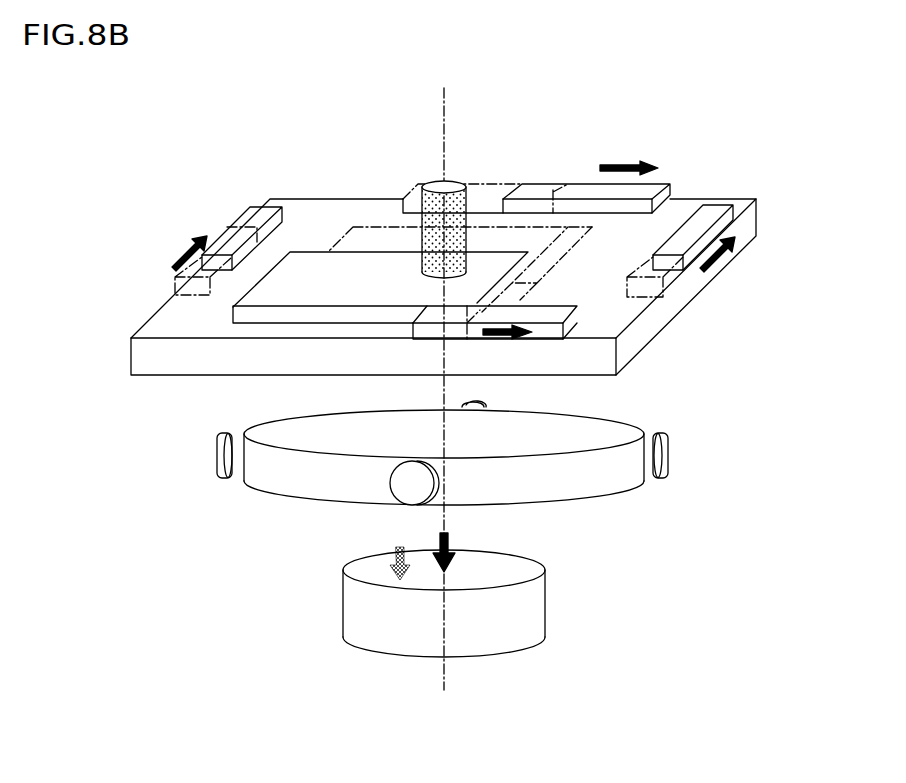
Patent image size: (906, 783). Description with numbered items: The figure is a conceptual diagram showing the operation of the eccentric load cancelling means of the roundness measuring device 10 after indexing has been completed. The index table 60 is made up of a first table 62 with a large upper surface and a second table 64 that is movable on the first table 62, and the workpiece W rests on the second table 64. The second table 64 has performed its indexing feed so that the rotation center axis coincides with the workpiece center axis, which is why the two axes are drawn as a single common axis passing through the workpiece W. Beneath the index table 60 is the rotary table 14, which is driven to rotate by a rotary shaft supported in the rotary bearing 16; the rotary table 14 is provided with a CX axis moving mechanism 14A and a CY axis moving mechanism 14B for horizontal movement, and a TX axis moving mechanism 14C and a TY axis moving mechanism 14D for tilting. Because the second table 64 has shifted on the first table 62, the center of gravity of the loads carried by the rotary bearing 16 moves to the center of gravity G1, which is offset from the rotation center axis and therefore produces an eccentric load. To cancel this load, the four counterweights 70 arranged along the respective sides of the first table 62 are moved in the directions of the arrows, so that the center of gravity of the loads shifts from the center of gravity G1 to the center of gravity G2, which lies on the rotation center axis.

The roundness measuring device 10 is at (556, 99).
The rotary table 14 is at (624, 413).
The CX axis moving mechanism 14A is at (668, 455).
The CY axis moving mechanism 14B is at (413, 498).
The TX axis moving mechanism 14C is at (217, 456).
The TY axis moving mechanism 14D is at (480, 404).
The rotary bearing 16 is at (545, 606).
The index table 60 is at (720, 190).
The first table 62 is at (326, 215).
The second table 64 is at (263, 299).
The counterweights 70 is at (250, 220).
The workpiece W is at (434, 182).
The center of gravity G1 is at (397, 558).
The center of gravity G2 is at (453, 543).